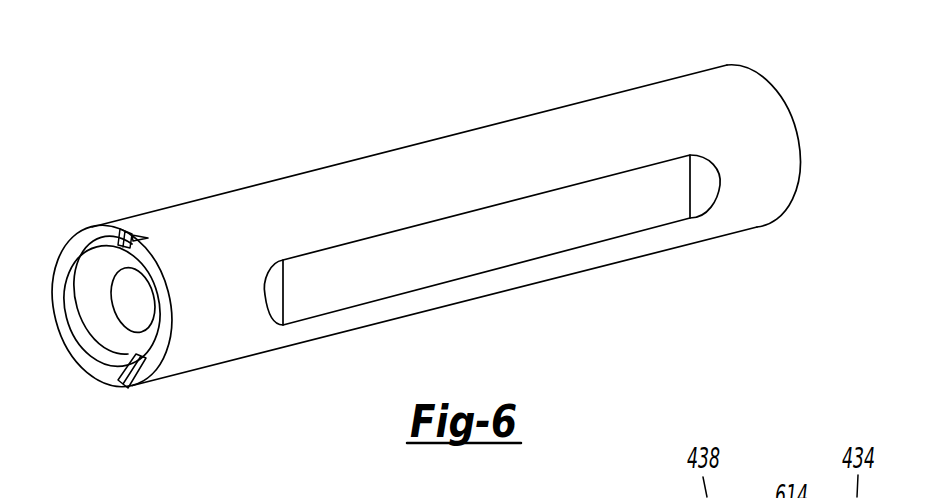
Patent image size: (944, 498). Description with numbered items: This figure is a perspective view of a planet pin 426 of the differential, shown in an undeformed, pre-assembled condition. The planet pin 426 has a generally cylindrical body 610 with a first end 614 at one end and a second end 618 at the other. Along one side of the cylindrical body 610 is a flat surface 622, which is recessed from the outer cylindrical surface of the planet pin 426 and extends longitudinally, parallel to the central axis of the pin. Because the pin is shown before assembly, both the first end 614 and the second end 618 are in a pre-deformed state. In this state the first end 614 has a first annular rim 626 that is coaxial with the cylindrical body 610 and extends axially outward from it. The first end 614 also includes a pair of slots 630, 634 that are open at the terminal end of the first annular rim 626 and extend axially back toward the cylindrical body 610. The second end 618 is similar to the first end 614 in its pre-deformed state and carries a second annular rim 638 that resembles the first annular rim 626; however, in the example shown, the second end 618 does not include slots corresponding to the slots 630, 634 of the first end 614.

The planet pin 426 is at (562, 298).
The cylindrical body 610 is at (413, 173).
The first end 614 is at (62, 251).
The second end 618 is at (759, 72).
The flat surface 622 is at (393, 265).
The first annular rim 626 is at (93, 368).
The slot 630 is at (138, 233).
The slot 634 is at (120, 386).
The second annular rim 638 is at (799, 135).